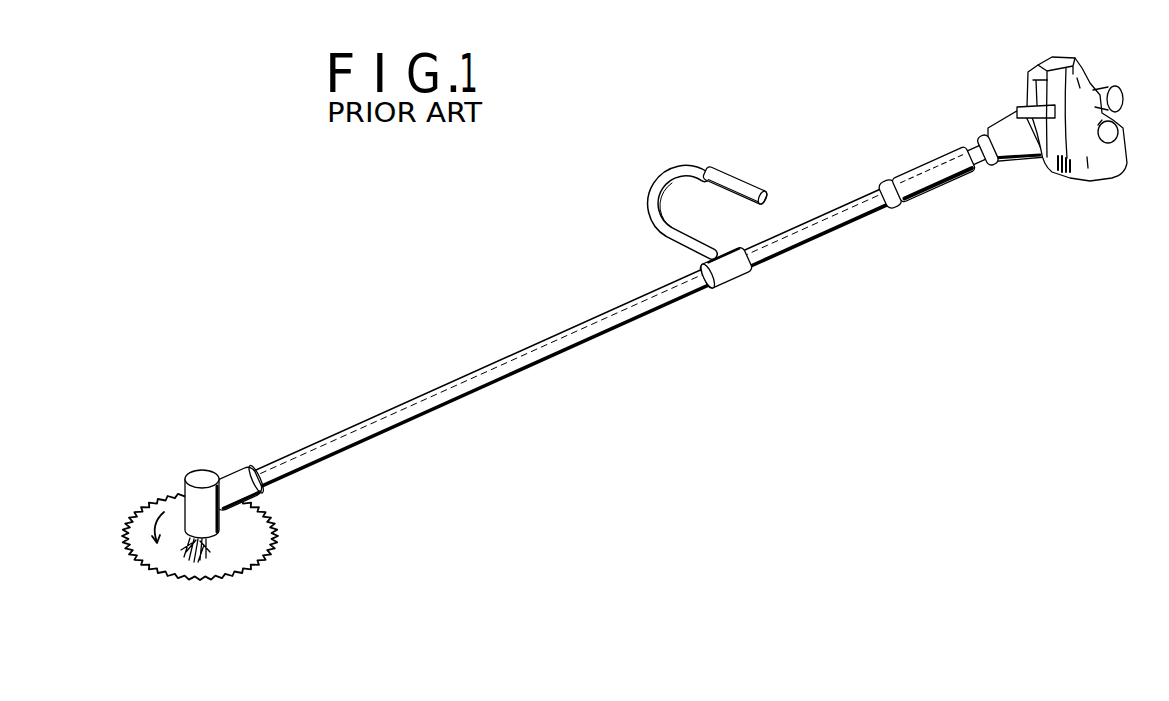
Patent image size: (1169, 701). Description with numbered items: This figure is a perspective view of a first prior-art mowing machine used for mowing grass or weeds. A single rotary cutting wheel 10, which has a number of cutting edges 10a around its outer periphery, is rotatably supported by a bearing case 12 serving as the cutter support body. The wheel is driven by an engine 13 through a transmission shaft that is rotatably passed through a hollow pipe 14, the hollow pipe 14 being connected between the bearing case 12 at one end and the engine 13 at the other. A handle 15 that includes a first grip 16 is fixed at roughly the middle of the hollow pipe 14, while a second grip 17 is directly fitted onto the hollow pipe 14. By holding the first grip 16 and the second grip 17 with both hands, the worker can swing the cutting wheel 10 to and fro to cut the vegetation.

The rotary cutting wheel 10 is at (216, 559).
The cutting edges 10a is at (253, 570).
The bearing case 12 is at (201, 473).
The engine 13 is at (1083, 78).
The hollow pipe 14 is at (488, 383).
The handle 15 is at (676, 170).
The first grip 16 is at (745, 180).
The second grip 17 is at (921, 168).